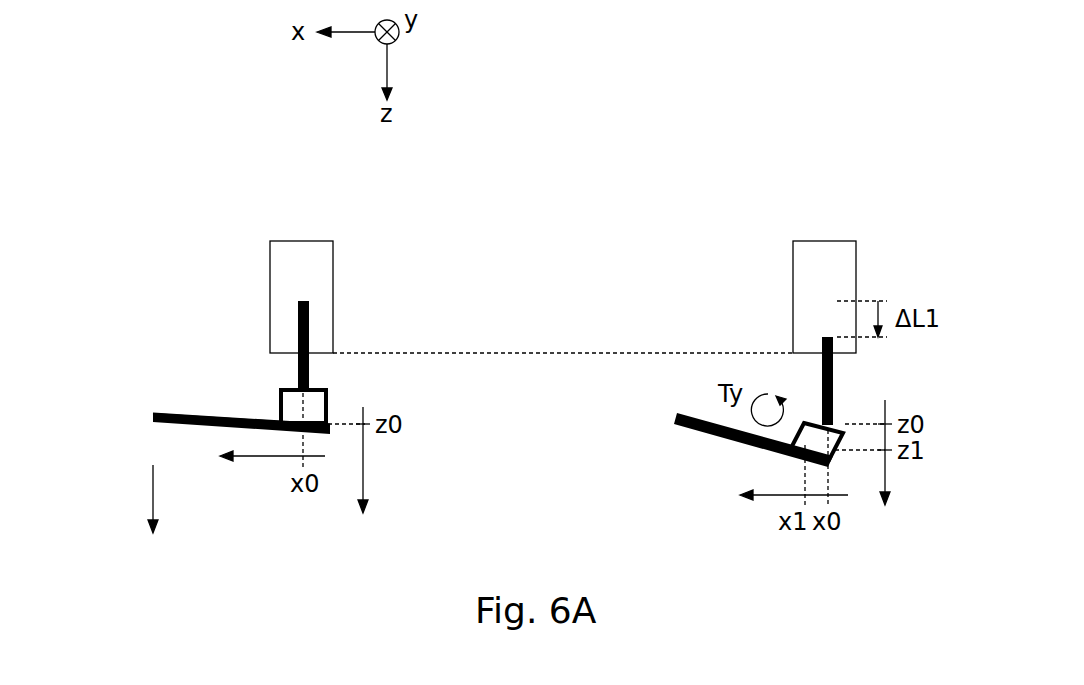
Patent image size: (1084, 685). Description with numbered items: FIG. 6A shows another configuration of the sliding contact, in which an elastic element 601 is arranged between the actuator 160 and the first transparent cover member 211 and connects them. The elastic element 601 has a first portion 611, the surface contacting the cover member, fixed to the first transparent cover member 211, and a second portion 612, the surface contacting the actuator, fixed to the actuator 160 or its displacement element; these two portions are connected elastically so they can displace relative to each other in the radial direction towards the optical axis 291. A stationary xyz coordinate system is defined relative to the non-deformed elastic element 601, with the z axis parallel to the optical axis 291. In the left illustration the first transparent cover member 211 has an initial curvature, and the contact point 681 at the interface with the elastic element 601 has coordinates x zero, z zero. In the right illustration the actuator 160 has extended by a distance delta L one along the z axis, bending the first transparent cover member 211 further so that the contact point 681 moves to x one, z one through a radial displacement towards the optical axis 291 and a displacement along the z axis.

The actuator 160 is at (345, 247).
The second portion 612 is at (294, 385).
The elastic element 601 is at (298, 421).
The first portion 611 is at (280, 413).
The first transparent cover member 211 is at (190, 412).
The contact point 681 is at (318, 411).
The optical axis 291 is at (129, 499).